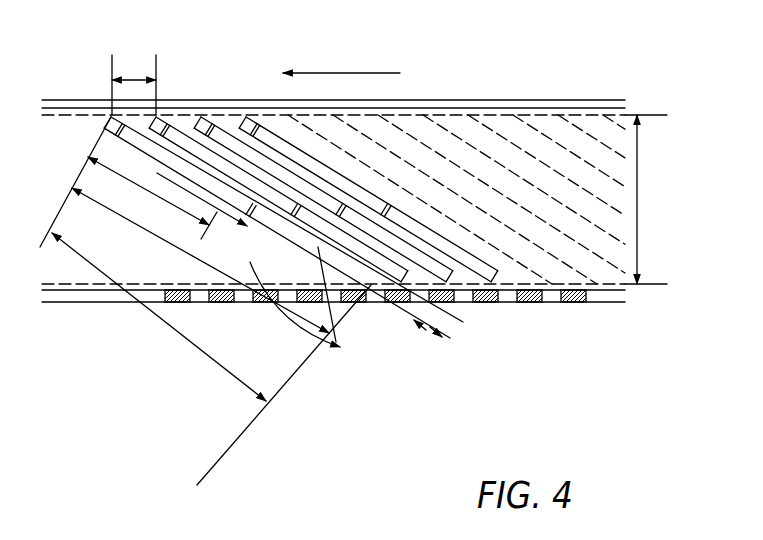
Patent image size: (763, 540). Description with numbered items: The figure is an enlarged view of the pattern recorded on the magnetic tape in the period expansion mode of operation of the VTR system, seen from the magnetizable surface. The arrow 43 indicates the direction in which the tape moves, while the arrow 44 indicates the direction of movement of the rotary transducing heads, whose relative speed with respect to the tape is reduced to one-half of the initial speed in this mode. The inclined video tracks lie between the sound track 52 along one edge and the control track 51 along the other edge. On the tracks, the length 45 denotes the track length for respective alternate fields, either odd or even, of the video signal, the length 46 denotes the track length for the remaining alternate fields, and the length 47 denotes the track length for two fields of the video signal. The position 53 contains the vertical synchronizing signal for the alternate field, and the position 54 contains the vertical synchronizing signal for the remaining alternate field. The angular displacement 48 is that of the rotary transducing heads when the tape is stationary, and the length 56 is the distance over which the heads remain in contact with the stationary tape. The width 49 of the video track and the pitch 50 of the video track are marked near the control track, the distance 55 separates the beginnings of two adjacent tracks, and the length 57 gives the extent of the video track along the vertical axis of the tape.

The arrow 43 is at (353, 73).
The arrow 44 is at (254, 226).
The length of the video tracks for alternate fields 45 is at (132, 181).
The length of the video tracks for remaining alternate fields 46 is at (252, 265).
The length of the video tracks for two fields 47 is at (144, 230).
The angular displacement of the rotary transducing heads 48 is at (368, 274).
The width of the video track 49 is at (413, 330).
The pitch of the video track 50 is at (458, 323).
The control track 51 is at (527, 303).
The sound track 52 is at (509, 108).
The position of the vertical synchronizing signal for the alternate field 53 is at (108, 122).
The position of the vertical synchronizing signal for the remaining alternate field 54 is at (245, 232).
The distance between the beginnings of two adjacent tracks 55 is at (138, 80).
The length of head contact with stationary tape 56 is at (173, 336).
The length of the video track along the vertical axis of the tape 57 is at (639, 206).